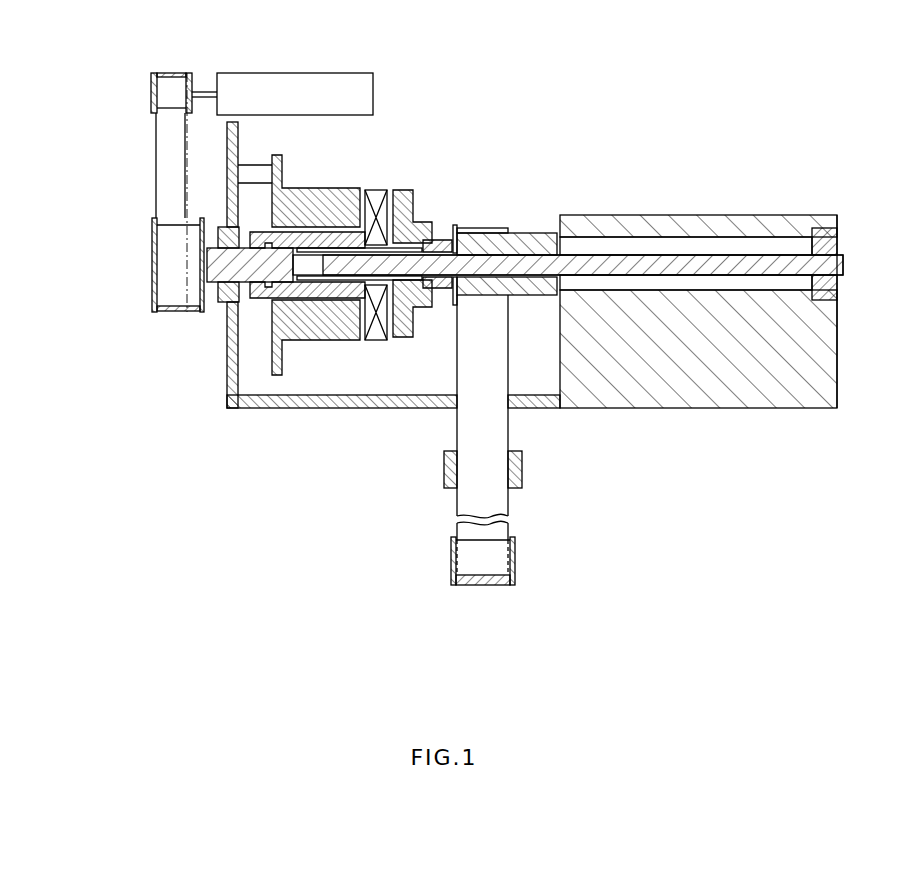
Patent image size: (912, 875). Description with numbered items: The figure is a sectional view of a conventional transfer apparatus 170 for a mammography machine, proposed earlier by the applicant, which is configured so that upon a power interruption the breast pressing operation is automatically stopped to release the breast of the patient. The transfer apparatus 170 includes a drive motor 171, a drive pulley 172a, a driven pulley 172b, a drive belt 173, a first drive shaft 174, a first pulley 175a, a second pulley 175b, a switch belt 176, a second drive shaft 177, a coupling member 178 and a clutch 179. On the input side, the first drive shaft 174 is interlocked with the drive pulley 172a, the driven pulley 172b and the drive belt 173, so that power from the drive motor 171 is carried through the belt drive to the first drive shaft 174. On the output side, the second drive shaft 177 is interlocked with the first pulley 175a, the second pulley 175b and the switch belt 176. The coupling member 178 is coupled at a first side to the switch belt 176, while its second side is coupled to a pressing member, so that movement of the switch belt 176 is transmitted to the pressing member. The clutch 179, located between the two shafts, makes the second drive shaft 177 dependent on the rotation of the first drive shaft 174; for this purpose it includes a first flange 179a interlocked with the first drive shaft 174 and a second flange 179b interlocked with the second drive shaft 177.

The transfer apparatus 170 is at (559, 92).
The drive motor 171 is at (377, 80).
The drive pulley 172a is at (150, 85).
The driven pulley 172b is at (190, 313).
The drive belt 173 is at (155, 166).
The first drive shaft 174 is at (213, 283).
The first pulley 175a is at (527, 230).
The second pulley 175b is at (515, 560).
The switch belt 176 is at (508, 377).
The second drive shaft 177 is at (640, 250).
The coupling member 178 is at (522, 462).
The clutch 179 is at (399, 180).
The first flange 179a is at (368, 190).
The second flange 179b is at (407, 187).